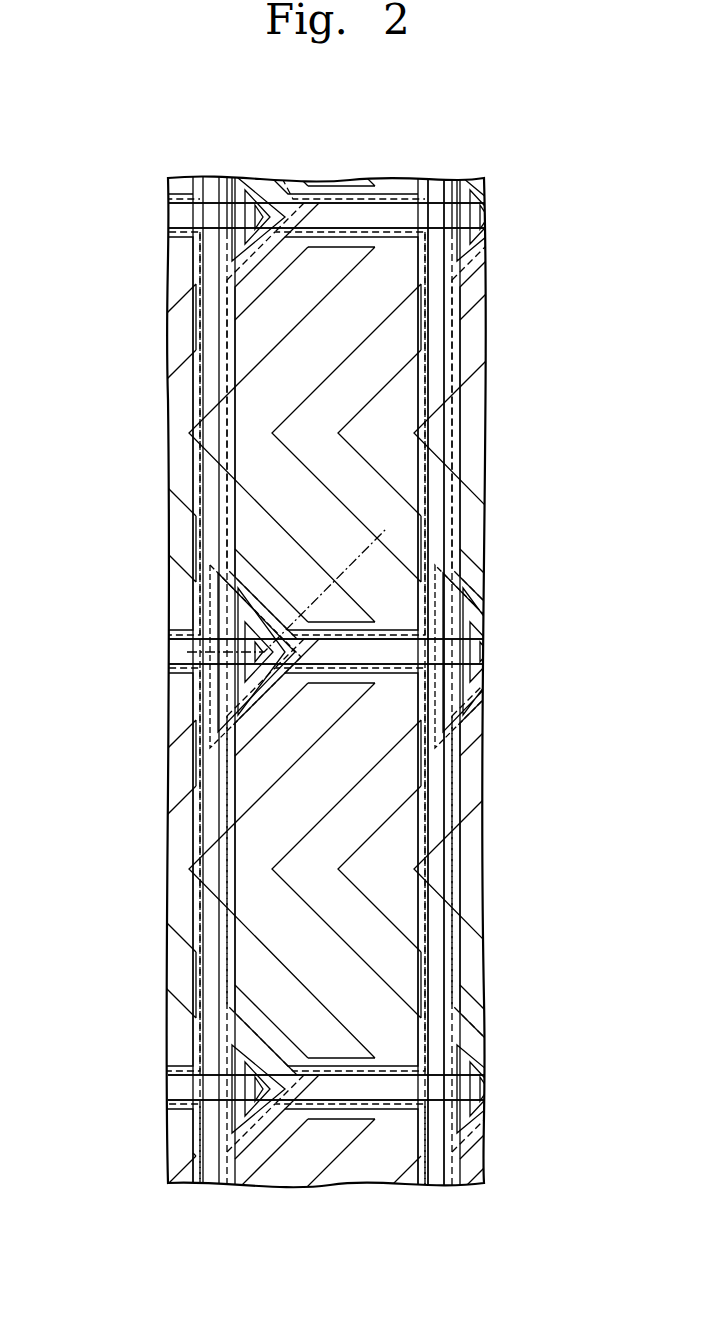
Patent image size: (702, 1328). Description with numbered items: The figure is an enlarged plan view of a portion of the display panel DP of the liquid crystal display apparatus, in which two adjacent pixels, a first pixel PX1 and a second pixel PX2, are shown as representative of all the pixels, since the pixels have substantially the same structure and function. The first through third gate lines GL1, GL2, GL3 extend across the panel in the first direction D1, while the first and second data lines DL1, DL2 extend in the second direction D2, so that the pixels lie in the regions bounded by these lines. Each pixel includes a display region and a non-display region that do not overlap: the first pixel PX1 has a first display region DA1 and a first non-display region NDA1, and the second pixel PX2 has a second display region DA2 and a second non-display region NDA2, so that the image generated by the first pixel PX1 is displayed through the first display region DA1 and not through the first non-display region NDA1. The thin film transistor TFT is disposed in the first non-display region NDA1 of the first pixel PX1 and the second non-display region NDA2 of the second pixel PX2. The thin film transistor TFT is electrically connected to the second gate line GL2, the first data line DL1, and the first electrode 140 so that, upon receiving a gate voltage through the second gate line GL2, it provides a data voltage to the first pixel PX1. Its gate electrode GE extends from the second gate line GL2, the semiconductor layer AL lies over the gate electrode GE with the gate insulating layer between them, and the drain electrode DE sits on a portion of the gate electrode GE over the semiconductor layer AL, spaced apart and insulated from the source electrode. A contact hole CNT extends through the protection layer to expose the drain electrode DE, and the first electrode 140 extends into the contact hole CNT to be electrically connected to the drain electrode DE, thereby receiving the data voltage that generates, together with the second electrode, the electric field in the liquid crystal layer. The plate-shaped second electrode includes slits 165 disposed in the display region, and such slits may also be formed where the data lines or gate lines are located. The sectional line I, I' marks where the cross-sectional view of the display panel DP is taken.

The display panel DP is at (494, 147).
The first data line DL1 is at (213, 183).
The second data line DL2 is at (440, 183).
The first gate line GL1 is at (175, 212).
The second gate line GL2 is at (212, 660).
The third gate line GL3 is at (175, 1097).
The first electrode 140 is at (235, 290).
The slit 165 is at (245, 350).
The first display region DA1 is at (222, 412).
The second display region DA2 is at (222, 858).
The first non-display region NDA1 is at (212, 567).
The second non-display region NDA2 is at (210, 728).
The thin film transistor TFT is at (163, 647).
The gate electrode GE is at (220, 576).
The semiconductor layer AL is at (226, 602).
The drain electrode DE is at (224, 624).
The contact hole CNT is at (256, 652).
The first pixel PX1 is at (327, 433).
The second pixel PX2 is at (430, 705).
The sectional line I is at (283, 621).
The sectional line I' is at (399, 534).
The first direction D1 is at (92, 1260).
The second direction D2 is at (92, 1260).